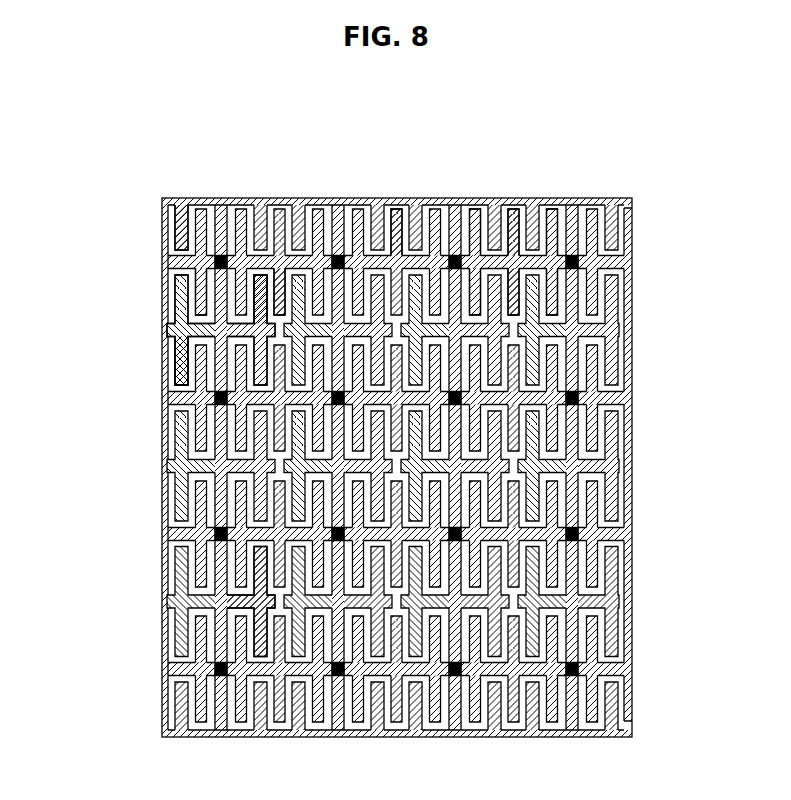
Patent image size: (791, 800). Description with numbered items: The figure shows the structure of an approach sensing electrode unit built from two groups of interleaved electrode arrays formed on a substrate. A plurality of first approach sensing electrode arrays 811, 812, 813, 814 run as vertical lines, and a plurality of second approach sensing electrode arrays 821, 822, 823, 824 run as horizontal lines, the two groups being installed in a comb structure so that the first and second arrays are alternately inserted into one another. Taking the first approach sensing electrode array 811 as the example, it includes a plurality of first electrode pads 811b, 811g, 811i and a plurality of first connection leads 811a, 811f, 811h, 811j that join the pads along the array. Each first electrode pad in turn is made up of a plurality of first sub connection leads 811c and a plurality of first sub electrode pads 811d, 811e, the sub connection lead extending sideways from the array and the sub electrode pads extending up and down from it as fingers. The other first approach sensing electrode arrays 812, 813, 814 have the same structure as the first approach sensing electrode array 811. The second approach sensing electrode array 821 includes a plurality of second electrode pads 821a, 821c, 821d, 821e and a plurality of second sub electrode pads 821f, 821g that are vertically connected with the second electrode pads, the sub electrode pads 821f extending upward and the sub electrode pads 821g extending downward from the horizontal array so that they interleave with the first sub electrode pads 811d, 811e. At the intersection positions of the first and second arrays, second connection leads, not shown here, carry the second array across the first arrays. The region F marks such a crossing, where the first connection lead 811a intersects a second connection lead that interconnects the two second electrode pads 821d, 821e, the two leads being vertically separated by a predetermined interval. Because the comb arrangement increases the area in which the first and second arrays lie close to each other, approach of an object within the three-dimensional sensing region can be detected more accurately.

The first approach sensing electrode array 811 is at (221, 197).
The first approach sensing electrode array 812 is at (338, 197).
The first approach sensing electrode array 813 is at (455, 197).
The first approach sensing electrode array 814 is at (572, 197).
The second approach sensing electrode array 821 is at (632, 263).
The second approach sensing electrode array 822 is at (632, 398).
The second approach sensing electrode array 823 is at (632, 534).
The second approach sensing electrode array 824 is at (632, 669).
The first connection lead 811a is at (187, 248).
The first electrode pad 811b is at (218, 337).
The first sub connection lead 811c is at (243, 320).
The first sub electrode pad 811d is at (182, 387).
The first sub electrode pad 811e is at (258, 283).
The first connection lead 811f is at (218, 407).
The first electrode pad 811g is at (218, 468).
The first connection lead 811h is at (188, 536).
The first electrode pad 811i is at (217, 606).
The first connection lead 811j is at (188, 670).
The second electrode pad 821a is at (518, 258).
The second electrode pad 821c is at (399, 252).
The second electrode pad 821d is at (283, 265).
The second electrode pad 821e is at (200, 290).
The second sub electrode pad 821f is at (512, 262).
The second sub electrode pad 821g is at (473, 290).
The region F is at (163, 213).